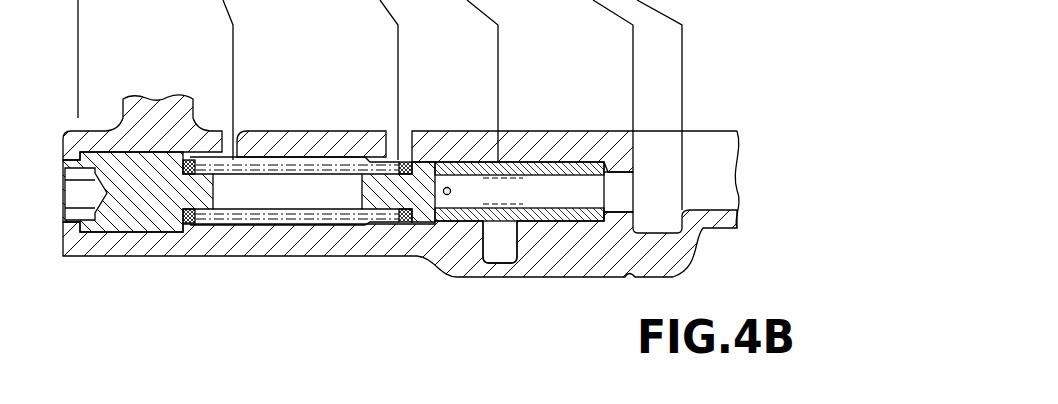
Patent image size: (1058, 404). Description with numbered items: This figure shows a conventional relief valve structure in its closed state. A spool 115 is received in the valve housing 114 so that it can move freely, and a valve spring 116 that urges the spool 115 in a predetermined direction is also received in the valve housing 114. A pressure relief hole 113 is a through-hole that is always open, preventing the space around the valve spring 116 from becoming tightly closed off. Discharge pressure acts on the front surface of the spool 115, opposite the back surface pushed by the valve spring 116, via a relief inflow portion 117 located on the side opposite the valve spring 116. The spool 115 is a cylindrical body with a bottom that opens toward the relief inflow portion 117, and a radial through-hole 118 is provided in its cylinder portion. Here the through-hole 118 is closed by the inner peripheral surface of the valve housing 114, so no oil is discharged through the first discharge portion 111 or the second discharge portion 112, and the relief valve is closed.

The first discharge portion 111 is at (404, 160).
The second discharge portion 112 is at (503, 162).
The pressure relief hole 113 is at (238, 131).
The valve housing 114 is at (417, 257).
The spool 115 is at (497, 222).
The valve spring 116 is at (274, 222).
The relief inflow portion 117 is at (636, 172).
The through-hole 118 is at (448, 163).